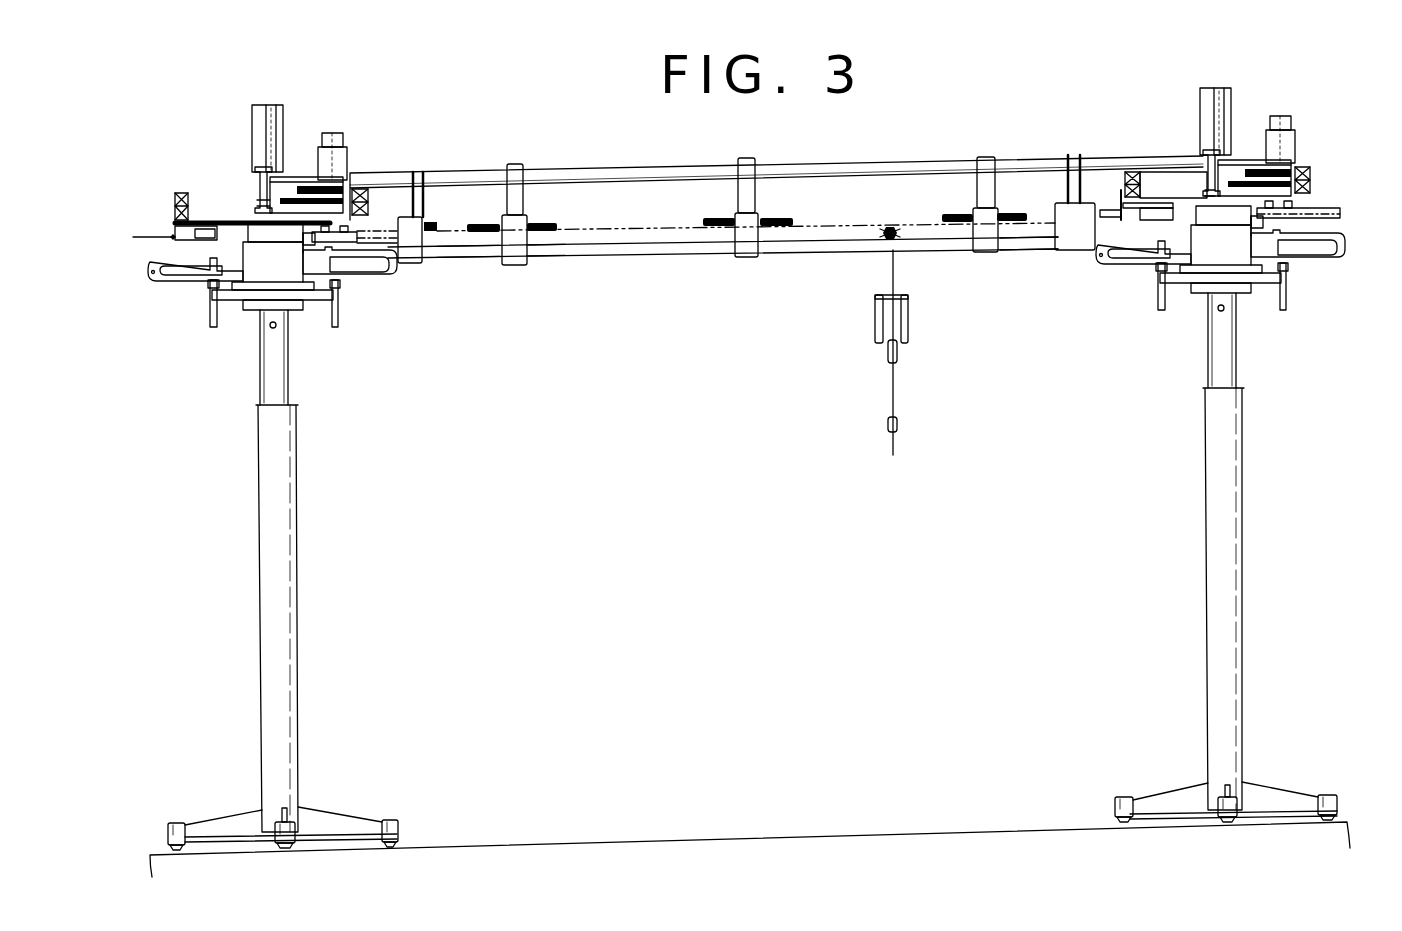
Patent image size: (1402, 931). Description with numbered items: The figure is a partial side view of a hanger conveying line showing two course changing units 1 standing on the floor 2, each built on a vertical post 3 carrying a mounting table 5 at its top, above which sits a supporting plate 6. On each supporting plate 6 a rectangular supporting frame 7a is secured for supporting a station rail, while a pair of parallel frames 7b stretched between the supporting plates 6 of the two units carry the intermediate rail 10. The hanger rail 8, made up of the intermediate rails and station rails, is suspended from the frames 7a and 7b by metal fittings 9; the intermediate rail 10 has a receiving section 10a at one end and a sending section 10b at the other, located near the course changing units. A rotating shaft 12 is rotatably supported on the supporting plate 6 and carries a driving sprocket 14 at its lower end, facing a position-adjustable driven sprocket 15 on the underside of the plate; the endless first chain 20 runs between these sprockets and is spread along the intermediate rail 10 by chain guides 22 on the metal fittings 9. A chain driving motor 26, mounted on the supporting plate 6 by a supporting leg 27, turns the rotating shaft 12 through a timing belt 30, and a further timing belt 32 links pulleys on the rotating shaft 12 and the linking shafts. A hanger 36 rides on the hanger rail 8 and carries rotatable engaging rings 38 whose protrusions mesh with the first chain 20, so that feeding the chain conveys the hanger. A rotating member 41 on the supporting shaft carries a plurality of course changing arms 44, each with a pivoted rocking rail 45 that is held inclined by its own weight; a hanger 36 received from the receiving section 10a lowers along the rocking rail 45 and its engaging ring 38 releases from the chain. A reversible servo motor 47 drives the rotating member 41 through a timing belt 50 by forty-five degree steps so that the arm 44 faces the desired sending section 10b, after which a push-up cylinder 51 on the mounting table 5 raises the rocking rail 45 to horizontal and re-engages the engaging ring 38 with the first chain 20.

The course changing unit 1 is at (752, 595).
The floor 2 is at (660, 848).
The post 3 is at (262, 568).
The mounting table 5 is at (307, 310).
The supporting plate 6 is at (208, 220).
The supporting frame 7a is at (178, 193).
The frame 7b is at (618, 169).
The hanger rail 8 is at (634, 259).
The metal fitting 9 is at (420, 264).
The intermediate rail 10 is at (548, 260).
The receiving section 10a is at (1036, 247).
The sending section 10b is at (462, 264).
The rotating shaft 12 is at (360, 232).
The driving sprocket 14 is at (323, 238).
The driven sprocket 15 is at (216, 240).
The first chain 20 is at (670, 233).
The chain guide 22 is at (535, 222).
The chain driving motor 26 is at (257, 129).
The supporting leg 27 is at (258, 180).
The timing belt 30 is at (303, 177).
The timing belt 32 is at (258, 203).
The hanger 36 is at (890, 272).
The engaging ring 38 is at (887, 228).
The rotating member 41 is at (238, 300).
The course changing arm 44 is at (160, 281).
The rocking rail 45 is at (195, 276).
The servo motor 47 is at (347, 157).
The timing belt 50 is at (747, 248).
The push-up cylinder 51 is at (210, 322).